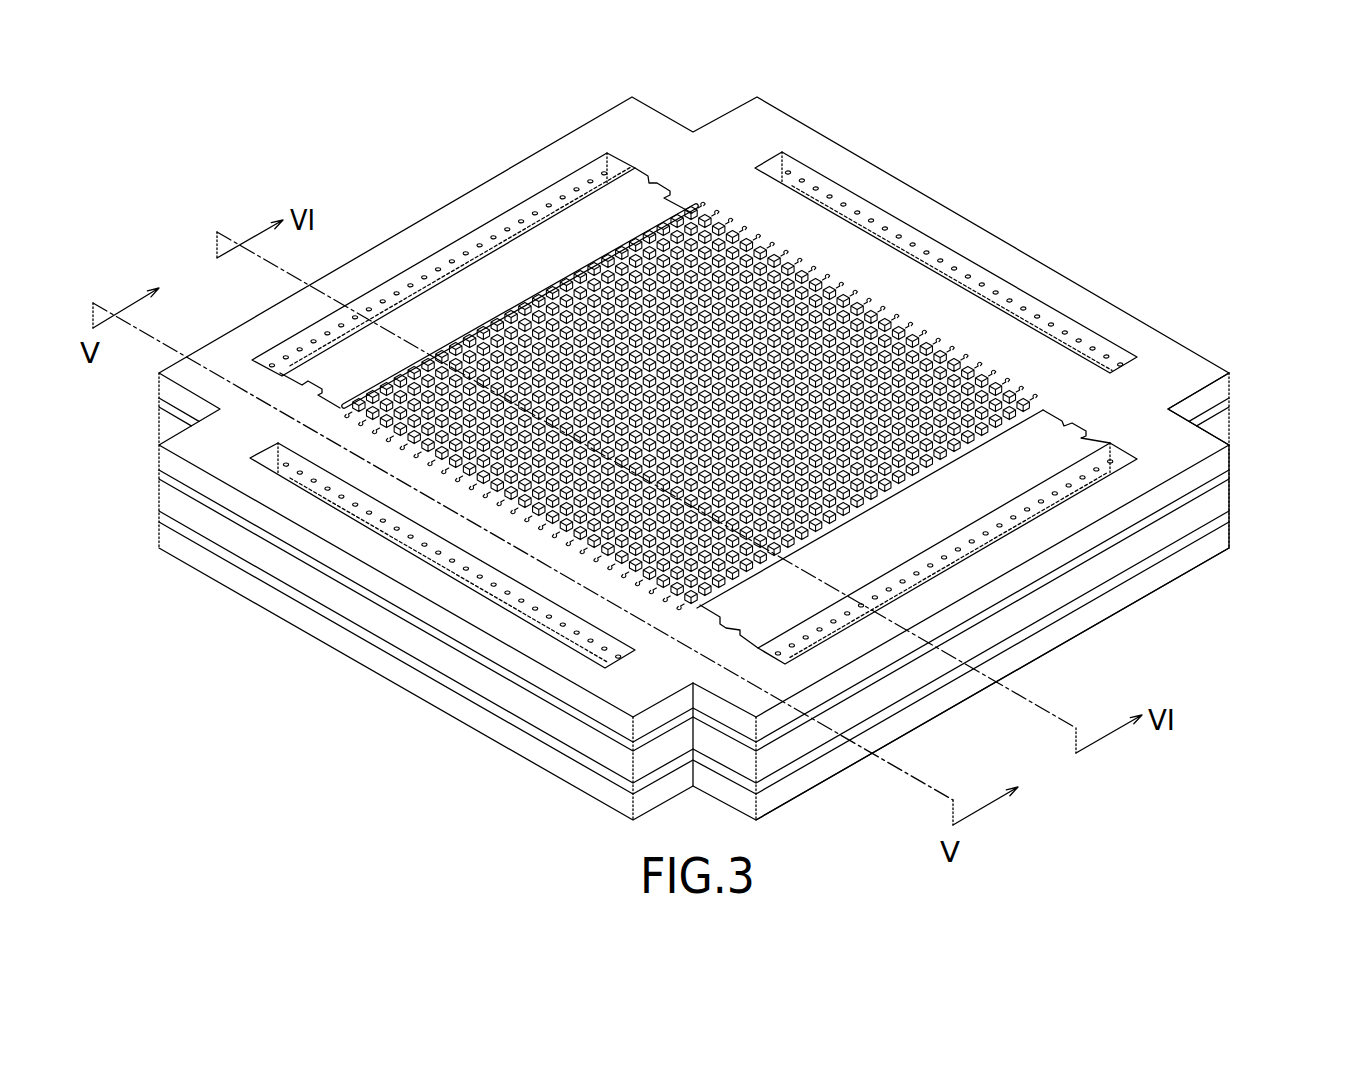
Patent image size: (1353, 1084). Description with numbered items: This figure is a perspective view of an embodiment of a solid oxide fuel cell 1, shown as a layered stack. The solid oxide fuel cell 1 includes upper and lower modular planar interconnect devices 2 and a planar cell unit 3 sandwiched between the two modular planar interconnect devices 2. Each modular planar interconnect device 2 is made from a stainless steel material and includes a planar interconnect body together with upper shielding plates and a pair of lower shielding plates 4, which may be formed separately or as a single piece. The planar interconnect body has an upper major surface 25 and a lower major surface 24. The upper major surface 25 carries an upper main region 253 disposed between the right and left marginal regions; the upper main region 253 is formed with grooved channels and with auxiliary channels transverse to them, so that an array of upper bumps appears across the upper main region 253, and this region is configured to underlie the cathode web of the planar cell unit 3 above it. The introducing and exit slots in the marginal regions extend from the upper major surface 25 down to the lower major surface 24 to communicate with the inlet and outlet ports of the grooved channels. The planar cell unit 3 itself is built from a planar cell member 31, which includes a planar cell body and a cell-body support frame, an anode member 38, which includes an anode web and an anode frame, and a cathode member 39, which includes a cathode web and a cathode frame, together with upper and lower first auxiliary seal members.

The solid oxide fuel cell 1 is at (1059, 180).
The modular planar interconnect device 2 is at (1243, 446).
The planar cell unit 3 is at (745, 600).
The lower shielding plates 4 is at (503, 593).
The lower major surface 24 is at (1185, 495).
The upper major surface 25 is at (1147, 567).
The planar cell member 31 is at (1223, 503).
The anode member 38 is at (1226, 476).
The cathode member 39 is at (725, 651).
The upper main region 253 is at (835, 317).